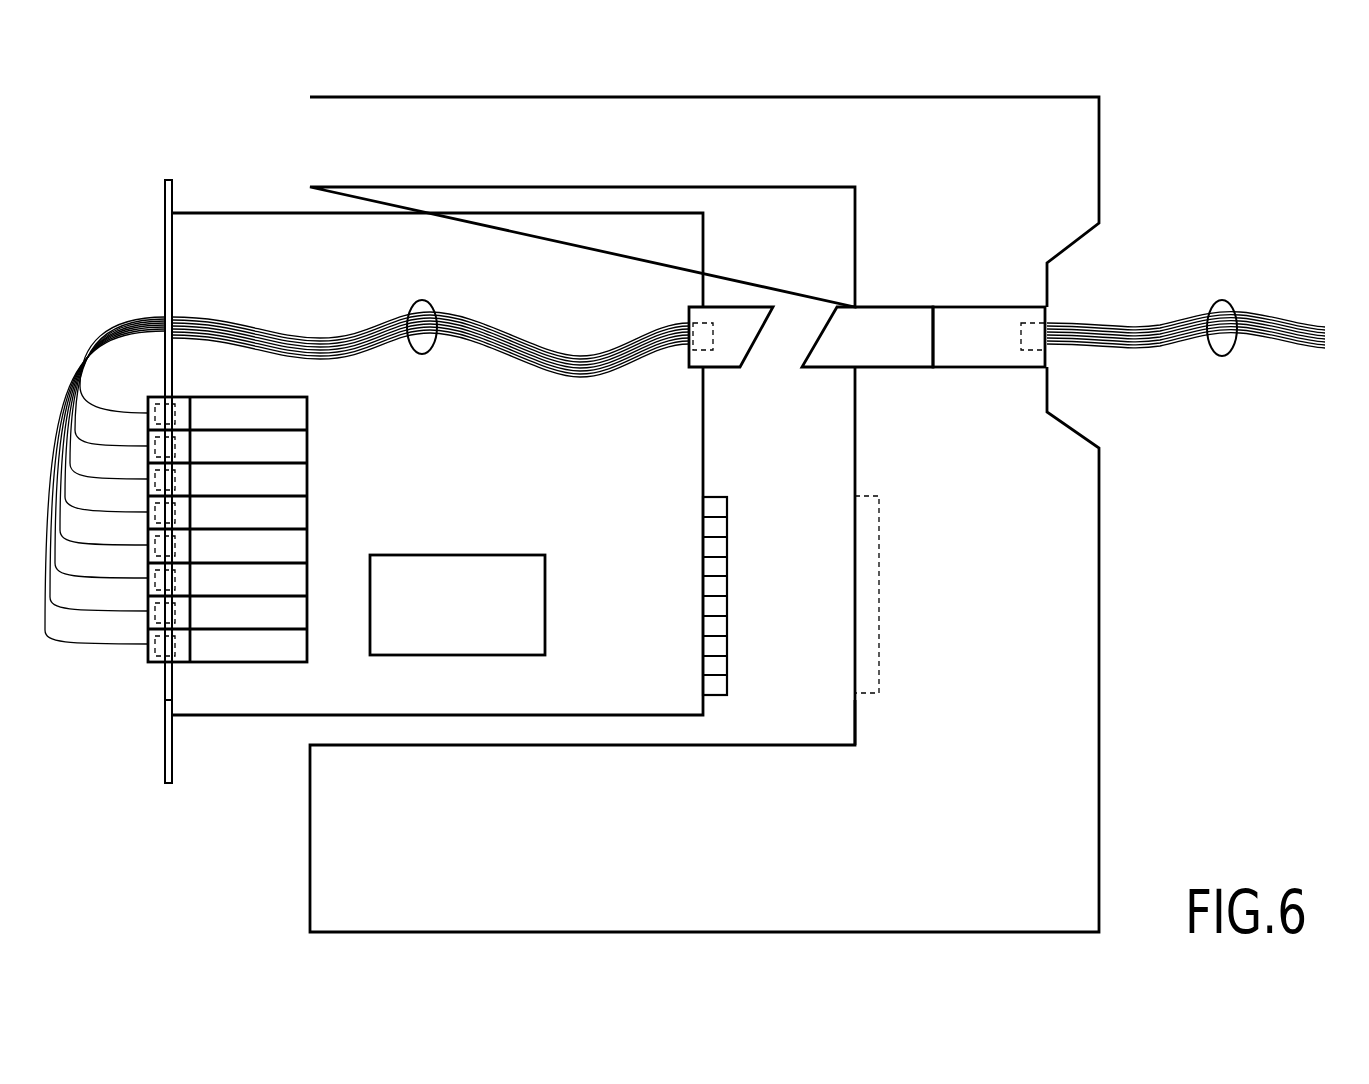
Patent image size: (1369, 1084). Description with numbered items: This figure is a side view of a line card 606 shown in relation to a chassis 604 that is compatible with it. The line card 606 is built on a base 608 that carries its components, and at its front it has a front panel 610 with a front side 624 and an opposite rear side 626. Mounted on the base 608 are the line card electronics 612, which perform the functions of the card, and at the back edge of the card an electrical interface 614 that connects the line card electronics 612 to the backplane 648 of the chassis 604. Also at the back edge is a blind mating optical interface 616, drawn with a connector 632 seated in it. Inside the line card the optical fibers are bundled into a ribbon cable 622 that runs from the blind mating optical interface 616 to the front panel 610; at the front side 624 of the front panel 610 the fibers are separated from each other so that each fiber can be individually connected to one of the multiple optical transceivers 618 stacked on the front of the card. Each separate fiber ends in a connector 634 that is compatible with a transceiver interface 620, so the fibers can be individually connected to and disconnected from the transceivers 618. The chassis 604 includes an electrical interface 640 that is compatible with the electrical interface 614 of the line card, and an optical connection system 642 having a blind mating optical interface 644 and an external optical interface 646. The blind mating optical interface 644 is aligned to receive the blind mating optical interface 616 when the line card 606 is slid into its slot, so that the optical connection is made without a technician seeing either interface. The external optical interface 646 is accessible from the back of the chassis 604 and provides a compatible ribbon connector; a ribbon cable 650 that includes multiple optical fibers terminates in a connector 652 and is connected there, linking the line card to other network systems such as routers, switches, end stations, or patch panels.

The chassis 604 is at (1100, 120).
The line card 606 is at (103, 781).
The base 608 is at (240, 718).
The front panel 610 is at (165, 278).
The line card electronics 612 is at (547, 603).
The electrical interface 614 is at (727, 497).
The blind mating optical interface 616 is at (745, 305).
The optical transceiver 618 is at (307, 405).
The transceiver interface 620 is at (148, 657).
The ribbon cable 622 is at (430, 300).
The front side 624 is at (160, 185).
The rear side of faceplate 626 is at (180, 203).
The ferrule 632 is at (703, 350).
The connector 634 is at (158, 675).
The electrical interface 640 is at (879, 592).
The optical connection system 642 is at (962, 318).
The blind mating optical interface 644 is at (895, 369).
The external optical interface 646 is at (985, 369).
The backplane 648 is at (856, 745).
The ribbon cable 650 is at (1222, 300).
The connector 652 is at (1033, 322).